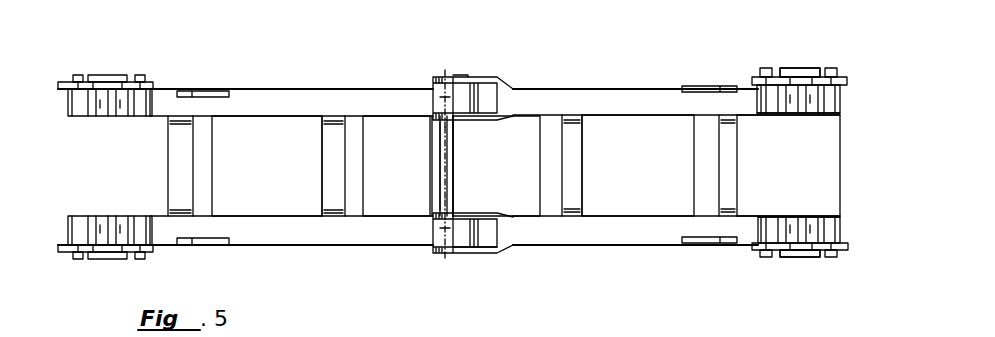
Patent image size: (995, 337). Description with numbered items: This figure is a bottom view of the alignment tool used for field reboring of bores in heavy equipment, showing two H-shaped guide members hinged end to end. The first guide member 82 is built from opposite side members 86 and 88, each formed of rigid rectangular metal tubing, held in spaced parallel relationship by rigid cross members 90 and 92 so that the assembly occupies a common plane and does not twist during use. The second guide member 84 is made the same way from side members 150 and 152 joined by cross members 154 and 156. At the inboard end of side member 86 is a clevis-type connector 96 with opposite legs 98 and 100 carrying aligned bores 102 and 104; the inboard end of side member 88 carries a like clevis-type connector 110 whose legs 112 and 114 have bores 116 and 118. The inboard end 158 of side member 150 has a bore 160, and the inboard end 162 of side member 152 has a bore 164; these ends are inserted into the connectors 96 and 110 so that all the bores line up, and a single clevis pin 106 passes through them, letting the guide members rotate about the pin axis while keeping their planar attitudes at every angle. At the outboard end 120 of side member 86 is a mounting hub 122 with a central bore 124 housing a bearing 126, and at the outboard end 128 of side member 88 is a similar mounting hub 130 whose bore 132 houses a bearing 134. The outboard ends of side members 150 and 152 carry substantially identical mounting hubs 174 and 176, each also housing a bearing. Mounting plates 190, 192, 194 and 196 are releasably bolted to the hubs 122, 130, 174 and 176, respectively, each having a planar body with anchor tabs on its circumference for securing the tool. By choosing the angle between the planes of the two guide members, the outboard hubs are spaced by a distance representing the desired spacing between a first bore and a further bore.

The first guide member 82 is at (676, 262).
The second guide member 84 is at (247, 71).
The first side member 86 is at (633, 240).
The second side member 88 is at (632, 93).
The cross member 90 is at (732, 158).
The cross member 92 is at (575, 157).
The clevis-type connector 96 is at (575, 208).
The leg 98 is at (435, 257).
The leg 100 is at (480, 213).
The bore 102 is at (452, 258).
The bore 104 is at (448, 208).
The clevis pin 106 is at (453, 173).
The clevis-type connector 110 is at (492, 80).
The leg 112 is at (430, 125).
The leg 114 is at (430, 80).
The bore 116 is at (452, 133).
The bore 118 is at (458, 73).
The outboard end 120 is at (788, 165).
The mounting hub 122 is at (840, 236).
The central bore 124 is at (836, 212).
The bearing 126 is at (812, 258).
The outboard end 128 is at (755, 93).
The mounting hub 130 is at (835, 113).
The bore 132 is at (838, 99).
The bearing 134 is at (808, 76).
The first side member 150 is at (268, 243).
The second side member 152 is at (280, 95).
The cross member 154 is at (203, 193).
The cross member 156 is at (317, 143).
The inboard end 158 is at (505, 235).
The bore 160 is at (427, 229).
The inboard end 162 is at (482, 100).
The bore 164 is at (440, 97).
The mounting hub 174 is at (90, 223).
The mounting hub 176 is at (88, 113).
The mounting plate 190 is at (783, 257).
The mounting plate 192 is at (778, 75).
The mounting plate 194 is at (65, 259).
The mounting plate 196 is at (152, 83).